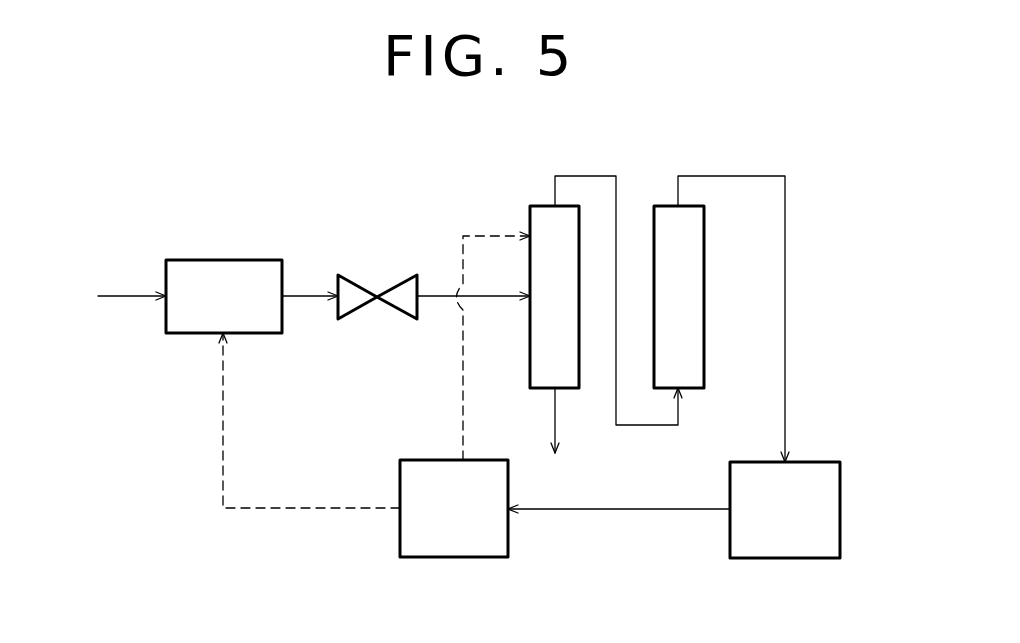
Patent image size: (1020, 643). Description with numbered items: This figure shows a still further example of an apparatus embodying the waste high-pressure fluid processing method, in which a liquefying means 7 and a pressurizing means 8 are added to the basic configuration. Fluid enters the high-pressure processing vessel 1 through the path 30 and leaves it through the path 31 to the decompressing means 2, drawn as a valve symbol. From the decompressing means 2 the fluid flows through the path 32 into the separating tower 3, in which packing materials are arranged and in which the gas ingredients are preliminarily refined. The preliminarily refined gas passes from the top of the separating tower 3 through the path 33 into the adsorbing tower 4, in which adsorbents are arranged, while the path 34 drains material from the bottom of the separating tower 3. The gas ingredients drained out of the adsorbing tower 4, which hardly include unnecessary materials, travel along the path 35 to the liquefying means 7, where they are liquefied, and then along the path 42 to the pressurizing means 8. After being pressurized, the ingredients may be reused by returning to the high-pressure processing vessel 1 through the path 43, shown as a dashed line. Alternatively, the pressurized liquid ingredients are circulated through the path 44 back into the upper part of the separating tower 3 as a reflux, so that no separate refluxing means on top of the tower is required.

The high-pressure processing vessel 1 is at (218, 260).
The decompressing means 2 is at (369, 283).
The separating tower 3 is at (530, 220).
The adsorbing tower 4 is at (704, 365).
The liquefying means 7 is at (787, 560).
The pressurizing means 8 is at (458, 560).
The path 30 is at (118, 292).
The path 31 is at (307, 292).
The path 32 is at (497, 296).
The path 33 is at (588, 176).
The path 34 is at (555, 423).
The path 35 is at (741, 176).
The path 42 is at (617, 509).
The path 43 is at (220, 413).
The path 44 is at (463, 403).